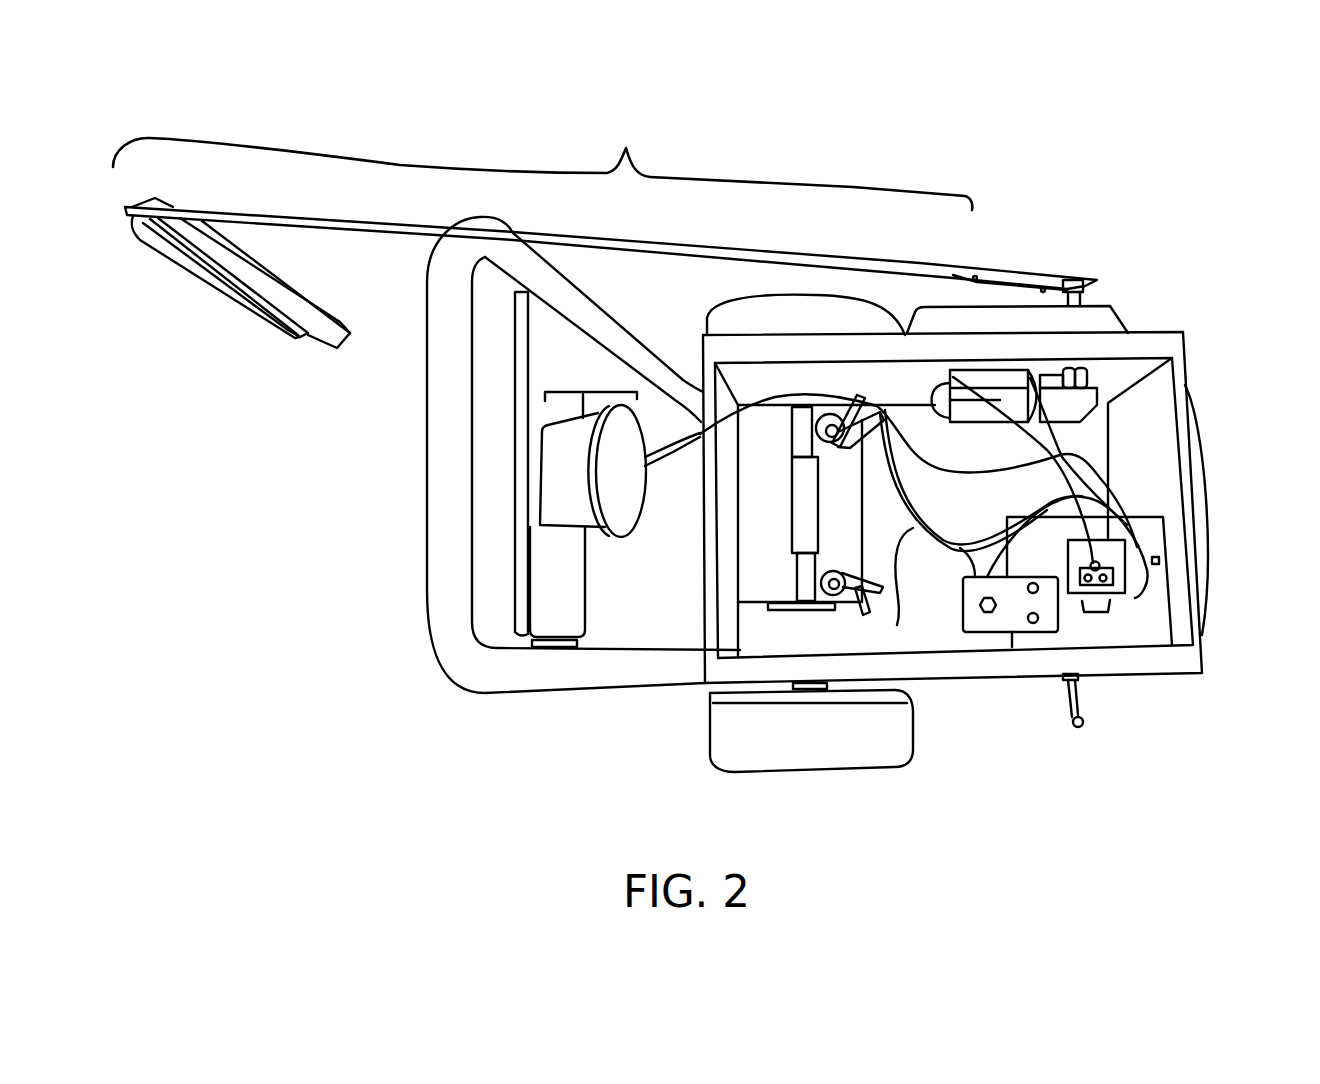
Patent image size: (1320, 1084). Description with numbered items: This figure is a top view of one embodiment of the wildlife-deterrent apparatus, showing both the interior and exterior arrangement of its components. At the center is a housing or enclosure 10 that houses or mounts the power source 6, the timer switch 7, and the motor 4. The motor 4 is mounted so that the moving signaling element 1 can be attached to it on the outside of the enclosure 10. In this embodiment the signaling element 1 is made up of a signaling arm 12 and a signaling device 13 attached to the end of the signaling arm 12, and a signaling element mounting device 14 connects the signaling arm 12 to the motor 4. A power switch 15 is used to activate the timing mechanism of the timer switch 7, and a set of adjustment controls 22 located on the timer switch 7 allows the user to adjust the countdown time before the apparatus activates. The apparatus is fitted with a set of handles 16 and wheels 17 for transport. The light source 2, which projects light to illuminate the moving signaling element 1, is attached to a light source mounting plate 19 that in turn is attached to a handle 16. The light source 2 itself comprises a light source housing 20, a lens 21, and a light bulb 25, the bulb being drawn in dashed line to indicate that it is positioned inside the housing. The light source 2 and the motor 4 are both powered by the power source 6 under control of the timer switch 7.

The moving signaling element 1 is at (542, 158).
The light source 2 is at (588, 375).
The motor 4 is at (1098, 405).
The power source 6 is at (762, 570).
The timer switch 7 is at (1157, 563).
The housing or enclosure 10 is at (983, 692).
The signaling arm 12 is at (863, 240).
The signaling device 13 is at (206, 316).
The signaling element mounting device 14 is at (1058, 252).
The power switch 15 is at (953, 622).
The handle 16 is at (412, 493).
The wheel 17 is at (767, 288).
The light source mounting plate 19 is at (502, 393).
The light source housing 20 is at (553, 532).
The lens 21 is at (632, 545).
The adjustment controls 22 is at (1097, 620).
The light bulb 25 is at (582, 488).